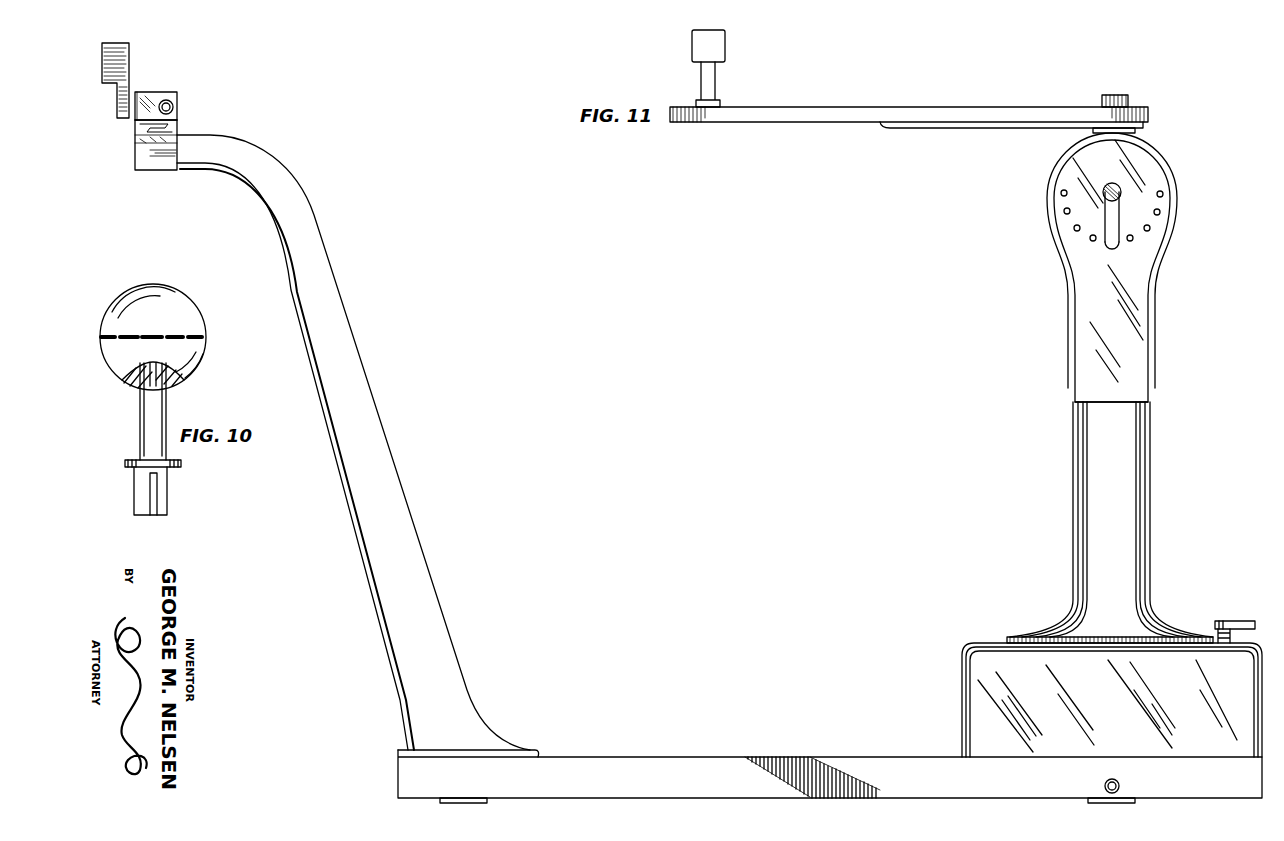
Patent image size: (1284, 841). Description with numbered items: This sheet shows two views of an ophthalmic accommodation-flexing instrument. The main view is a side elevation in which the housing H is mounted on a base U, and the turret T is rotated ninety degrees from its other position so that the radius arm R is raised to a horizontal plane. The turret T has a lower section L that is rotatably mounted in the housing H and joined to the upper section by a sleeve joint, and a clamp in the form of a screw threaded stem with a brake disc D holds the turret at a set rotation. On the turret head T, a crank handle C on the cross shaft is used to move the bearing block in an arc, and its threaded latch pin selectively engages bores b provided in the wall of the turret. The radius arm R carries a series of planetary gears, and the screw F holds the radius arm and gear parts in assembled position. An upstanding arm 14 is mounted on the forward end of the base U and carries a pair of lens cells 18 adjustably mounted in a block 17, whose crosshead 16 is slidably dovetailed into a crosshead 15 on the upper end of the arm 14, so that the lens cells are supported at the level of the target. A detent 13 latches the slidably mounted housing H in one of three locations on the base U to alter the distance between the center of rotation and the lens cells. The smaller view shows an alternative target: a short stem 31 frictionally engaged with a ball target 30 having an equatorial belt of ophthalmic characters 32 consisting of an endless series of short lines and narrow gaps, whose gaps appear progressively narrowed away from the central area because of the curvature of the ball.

In FIG. 11, the detent 13 is at (1104, 786).
In FIG. 11, the upstanding arm 14 is at (370, 352).
In FIG. 11, the crosshead 15 is at (136, 128).
In FIG. 11, the crosshead 16 is at (178, 119).
In FIG. 11, the block 17 is at (160, 92).
In FIG. 11, the lens cells 18 is at (130, 52).
In FIG. 10, the ball target 30 is at (178, 295).
In FIG. 10, the short stem 31 is at (138, 418).
In FIG. 10, the ophthalmic characters 32 is at (190, 333).
In FIG. 11, the base U is at (863, 755).
In FIG. 11, the housing H is at (962, 692).
In FIG. 11, the lower section L is at (1072, 475).
In FIG. 11, the turret T is at (1047, 190).
In FIG. 11, the crank handle C is at (1120, 228).
In FIG. 11, the bores b is at (1159, 190).
In FIG. 11, the screw threaded stem with brake disc D is at (1226, 621).
In FIG. 11, the indicator E is at (708, 68).
In FIG. 11, the screw F is at (1130, 100).
In FIG. 11, the radius arm R is at (810, 125).